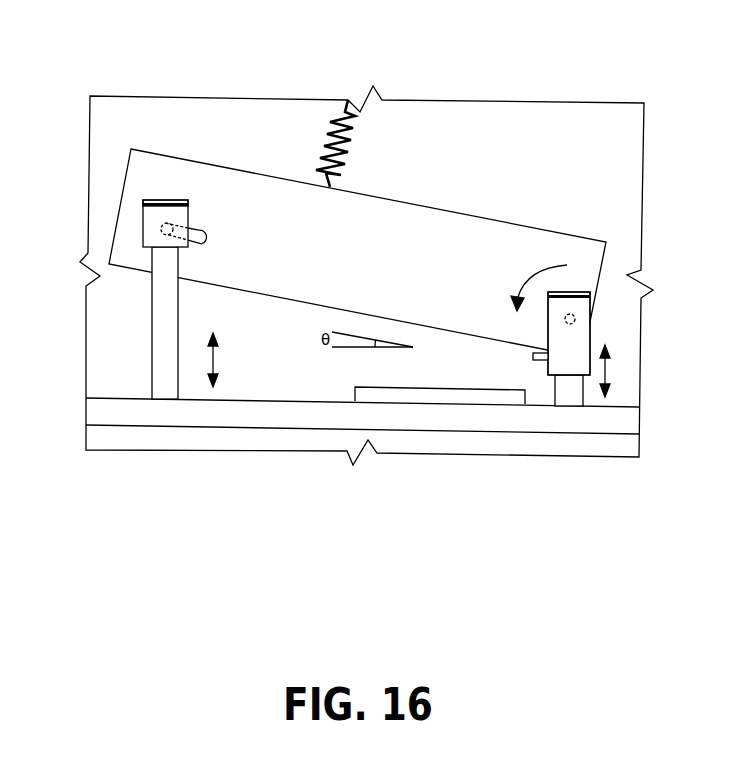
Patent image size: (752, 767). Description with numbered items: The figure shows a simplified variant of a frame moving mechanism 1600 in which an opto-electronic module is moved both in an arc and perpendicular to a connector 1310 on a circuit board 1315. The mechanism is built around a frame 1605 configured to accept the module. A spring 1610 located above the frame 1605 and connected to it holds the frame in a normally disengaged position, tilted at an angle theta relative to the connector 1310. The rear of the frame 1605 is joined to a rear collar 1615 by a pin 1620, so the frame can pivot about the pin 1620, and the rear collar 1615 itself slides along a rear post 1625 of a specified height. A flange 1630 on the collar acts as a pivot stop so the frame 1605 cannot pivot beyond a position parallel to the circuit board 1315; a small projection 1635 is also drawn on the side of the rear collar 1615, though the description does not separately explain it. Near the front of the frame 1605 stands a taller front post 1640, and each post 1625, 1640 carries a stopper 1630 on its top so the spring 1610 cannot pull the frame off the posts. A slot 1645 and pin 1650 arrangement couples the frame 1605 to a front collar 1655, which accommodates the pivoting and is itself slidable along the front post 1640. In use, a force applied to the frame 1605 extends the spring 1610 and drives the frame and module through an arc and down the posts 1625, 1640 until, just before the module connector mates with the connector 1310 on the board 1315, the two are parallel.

The mechanism 1600 is at (490, 123).
The frame 1605 is at (455, 290).
The spring 1610 is at (348, 152).
The rear collar 1615 is at (580, 340).
The pin 1620 is at (575, 318).
The rear post 1625 is at (568, 397).
The flange 1630 is at (167, 200).
The stop bracket 1635 is at (540, 360).
The front post 1640 is at (163, 386).
The slot 1645 is at (197, 230).
The pin 1650 is at (161, 229).
The front collar 1655 is at (153, 213).
The connector 1310 is at (367, 397).
The circuit board 1315 is at (482, 426).